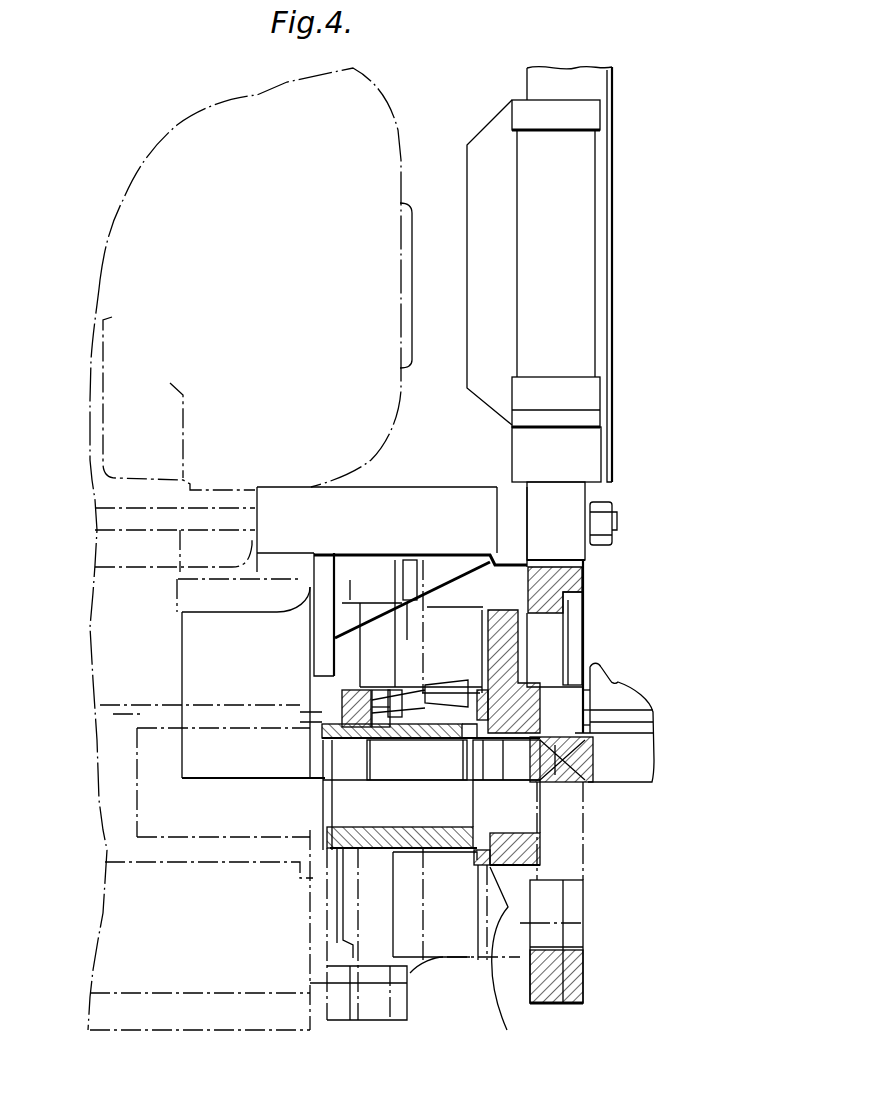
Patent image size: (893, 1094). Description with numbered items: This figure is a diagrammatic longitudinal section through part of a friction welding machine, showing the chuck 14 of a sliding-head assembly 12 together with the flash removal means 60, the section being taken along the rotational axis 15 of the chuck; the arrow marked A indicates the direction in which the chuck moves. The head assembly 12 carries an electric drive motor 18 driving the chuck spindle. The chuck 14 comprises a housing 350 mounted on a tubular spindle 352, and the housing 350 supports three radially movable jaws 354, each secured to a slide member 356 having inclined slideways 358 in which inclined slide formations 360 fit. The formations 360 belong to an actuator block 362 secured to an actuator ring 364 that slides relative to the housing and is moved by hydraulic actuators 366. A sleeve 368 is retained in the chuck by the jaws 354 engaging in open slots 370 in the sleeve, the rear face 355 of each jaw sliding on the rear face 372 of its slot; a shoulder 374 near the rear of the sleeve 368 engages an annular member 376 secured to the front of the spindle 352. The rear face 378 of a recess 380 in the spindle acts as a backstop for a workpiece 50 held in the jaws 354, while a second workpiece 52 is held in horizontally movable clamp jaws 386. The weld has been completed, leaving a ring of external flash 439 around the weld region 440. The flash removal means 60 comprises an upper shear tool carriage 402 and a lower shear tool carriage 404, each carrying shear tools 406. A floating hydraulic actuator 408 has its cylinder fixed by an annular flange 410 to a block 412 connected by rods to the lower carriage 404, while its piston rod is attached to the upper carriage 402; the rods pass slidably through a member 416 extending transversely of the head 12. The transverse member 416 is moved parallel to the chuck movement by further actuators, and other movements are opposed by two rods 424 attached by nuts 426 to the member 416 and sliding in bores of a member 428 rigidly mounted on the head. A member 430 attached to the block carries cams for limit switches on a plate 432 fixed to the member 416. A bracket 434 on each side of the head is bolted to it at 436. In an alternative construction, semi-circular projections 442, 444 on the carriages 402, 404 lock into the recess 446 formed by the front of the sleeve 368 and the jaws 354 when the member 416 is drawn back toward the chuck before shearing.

The electric drive motor 18 is at (284, 305).
The sliding-head assembly 12 is at (392, 468).
The chuck 14 is at (340, 985).
The rotational axis 15 is at (166, 782).
The workpiece 50 is at (380, 779).
The second workpiece 52 is at (640, 757).
The flash removal means 60 is at (590, 614).
The direction A is at (698, 580).
The housing 350 is at (461, 972).
The tubular spindle 352 is at (140, 715).
The jaws 354 is at (655, 711).
The rear face of jaw 355 is at (464, 726).
The slide member 356 is at (460, 670).
The inclined slideways 358 is at (434, 672).
The inclined slide formations 360 is at (420, 672).
The actuator block 362 is at (420, 745).
The actuator ring 364 is at (441, 562).
The hydraulic actuators 366 is at (340, 592).
The sleeve 368 is at (527, 842).
The open slots 370 is at (545, 792).
The rear face of slot 372 is at (592, 692).
The shoulder 374 is at (368, 753).
The annular member 376 is at (345, 706).
The rear face of recess 378 is at (135, 862).
The recess 380 is at (215, 824).
The clamp jaws 386 is at (625, 698).
The upper shear tool carriage 402 is at (548, 575).
The lower shear tool carriage 404 is at (585, 985).
The shear tools 406 is at (585, 926).
The floating hydraulic actuator 408 is at (532, 259).
The annular flange 410 is at (595, 417).
The block 412 is at (527, 469).
The transverse member 416 is at (565, 545).
The rods 424 is at (617, 521).
The nuts 426 is at (608, 494).
The member 428 is at (372, 539).
The member 430 is at (605, 298).
The plate 432 is at (487, 142).
The bracket 434 is at (529, 970).
The bolted connection 436 is at (210, 685).
The external flash 439 is at (590, 725).
The weld region 440 is at (570, 758).
The semi-circular projection 442 is at (585, 601).
The semi-circular projection 444 is at (585, 957).
The recess 446 is at (483, 860).